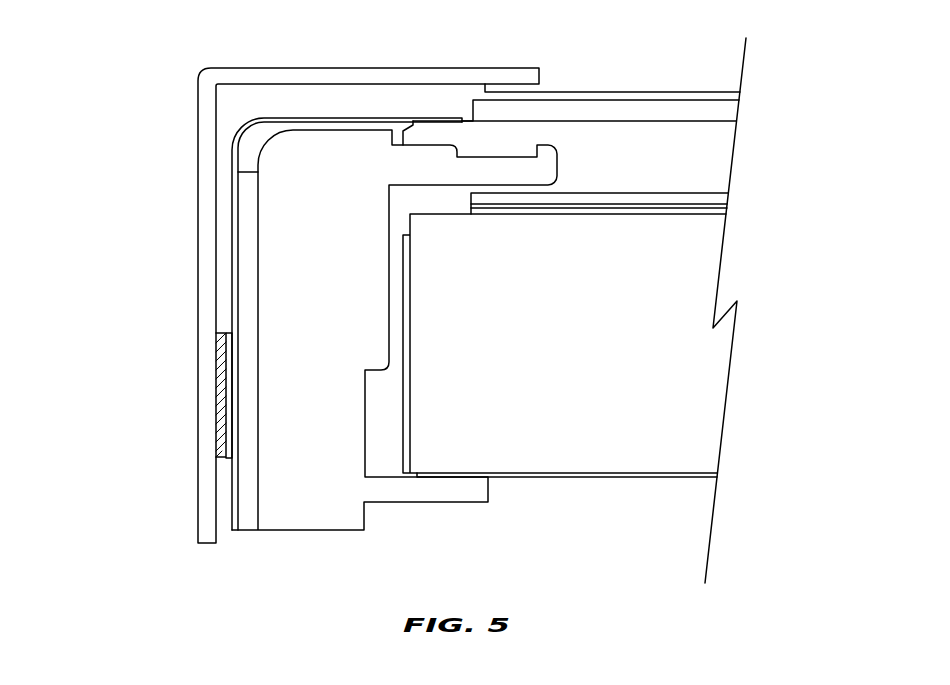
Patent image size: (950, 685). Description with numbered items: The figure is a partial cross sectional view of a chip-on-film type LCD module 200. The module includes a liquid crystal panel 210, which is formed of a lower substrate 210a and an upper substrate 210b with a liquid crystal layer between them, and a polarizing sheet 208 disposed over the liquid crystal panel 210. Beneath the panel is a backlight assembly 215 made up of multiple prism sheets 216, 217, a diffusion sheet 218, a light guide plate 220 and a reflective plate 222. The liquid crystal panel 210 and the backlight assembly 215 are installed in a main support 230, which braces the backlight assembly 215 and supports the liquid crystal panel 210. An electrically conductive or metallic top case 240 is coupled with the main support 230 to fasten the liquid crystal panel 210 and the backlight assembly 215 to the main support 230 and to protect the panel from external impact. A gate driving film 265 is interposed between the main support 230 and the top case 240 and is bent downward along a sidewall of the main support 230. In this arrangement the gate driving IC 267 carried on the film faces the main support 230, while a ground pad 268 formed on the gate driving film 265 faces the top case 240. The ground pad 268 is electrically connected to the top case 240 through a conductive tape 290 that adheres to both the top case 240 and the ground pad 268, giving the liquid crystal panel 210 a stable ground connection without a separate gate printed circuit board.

The COF type LCD module 200 is at (114, 306).
The polarizing sheet 208 is at (733, 95).
The liquid crystal panel 210 is at (640, 118).
The lower substrate 210a is at (727, 137).
The upper substrate 210b is at (728, 115).
The backlight assembly 215 is at (650, 326).
The prism sheet 216 is at (728, 196).
The prism sheet 217 is at (728, 205).
The diffusion sheet 218 is at (728, 213).
The light guide plate 220 is at (707, 387).
The reflective plate 222 is at (611, 468).
The main support 230 is at (270, 218).
The top case 240 is at (205, 112).
The gate driving film 265 is at (233, 172).
The gate driving IC 267 is at (248, 272).
The ground pad 268 is at (227, 362).
The conductive tape 290 is at (222, 422).